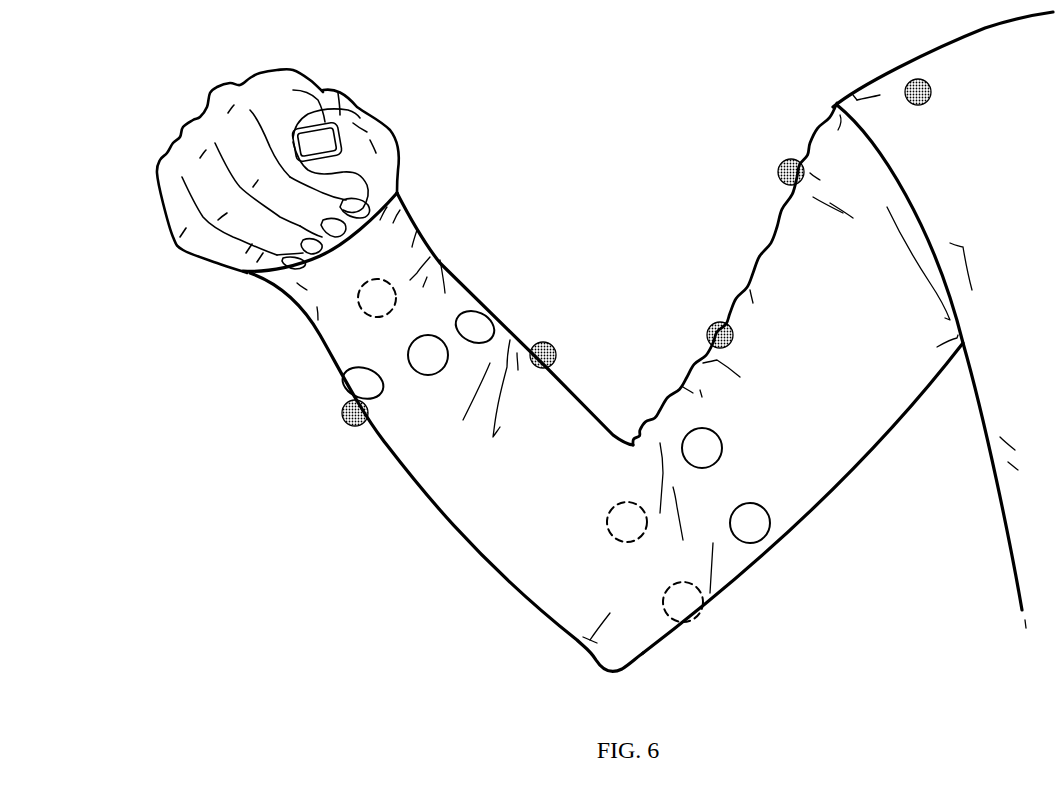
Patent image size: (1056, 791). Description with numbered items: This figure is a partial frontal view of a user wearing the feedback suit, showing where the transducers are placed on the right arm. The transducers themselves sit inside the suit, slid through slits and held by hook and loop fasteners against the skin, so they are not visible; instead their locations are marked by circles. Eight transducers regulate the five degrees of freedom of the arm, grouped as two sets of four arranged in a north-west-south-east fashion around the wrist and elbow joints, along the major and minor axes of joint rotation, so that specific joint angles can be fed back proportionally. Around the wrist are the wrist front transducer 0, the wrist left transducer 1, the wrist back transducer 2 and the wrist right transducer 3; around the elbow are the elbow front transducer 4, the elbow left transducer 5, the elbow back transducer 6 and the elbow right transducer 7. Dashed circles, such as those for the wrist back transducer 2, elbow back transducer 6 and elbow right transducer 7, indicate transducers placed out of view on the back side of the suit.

The wrist front transducer 0 is at (428, 355).
The wrist left transducer 1 is at (363, 383).
The wrist back transducer 2 is at (377, 298).
The wrist right transducer 3 is at (475, 327).
The elbow front transducer 4 is at (702, 448).
The elbow left transducer 5 is at (750, 523).
The elbow back transducer 6 is at (683, 602).
The elbow right transducer 7 is at (627, 522).